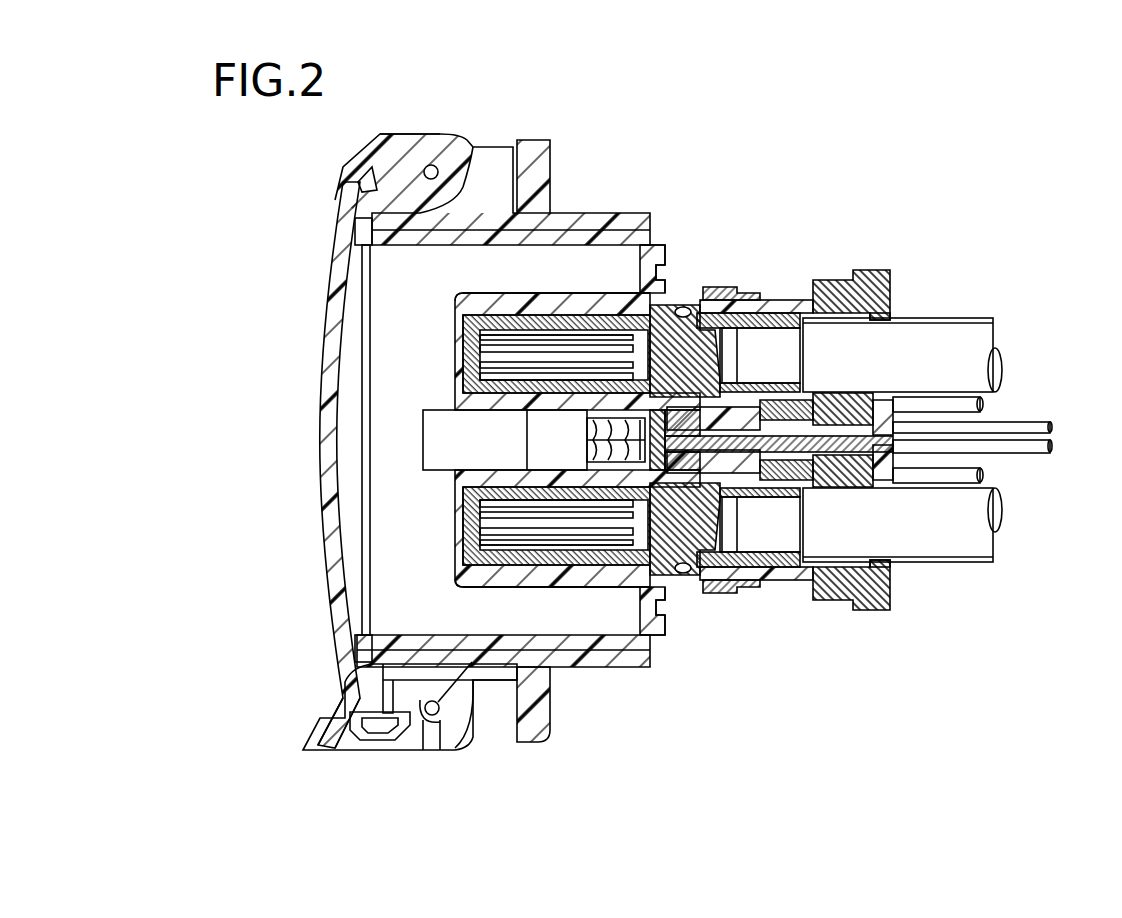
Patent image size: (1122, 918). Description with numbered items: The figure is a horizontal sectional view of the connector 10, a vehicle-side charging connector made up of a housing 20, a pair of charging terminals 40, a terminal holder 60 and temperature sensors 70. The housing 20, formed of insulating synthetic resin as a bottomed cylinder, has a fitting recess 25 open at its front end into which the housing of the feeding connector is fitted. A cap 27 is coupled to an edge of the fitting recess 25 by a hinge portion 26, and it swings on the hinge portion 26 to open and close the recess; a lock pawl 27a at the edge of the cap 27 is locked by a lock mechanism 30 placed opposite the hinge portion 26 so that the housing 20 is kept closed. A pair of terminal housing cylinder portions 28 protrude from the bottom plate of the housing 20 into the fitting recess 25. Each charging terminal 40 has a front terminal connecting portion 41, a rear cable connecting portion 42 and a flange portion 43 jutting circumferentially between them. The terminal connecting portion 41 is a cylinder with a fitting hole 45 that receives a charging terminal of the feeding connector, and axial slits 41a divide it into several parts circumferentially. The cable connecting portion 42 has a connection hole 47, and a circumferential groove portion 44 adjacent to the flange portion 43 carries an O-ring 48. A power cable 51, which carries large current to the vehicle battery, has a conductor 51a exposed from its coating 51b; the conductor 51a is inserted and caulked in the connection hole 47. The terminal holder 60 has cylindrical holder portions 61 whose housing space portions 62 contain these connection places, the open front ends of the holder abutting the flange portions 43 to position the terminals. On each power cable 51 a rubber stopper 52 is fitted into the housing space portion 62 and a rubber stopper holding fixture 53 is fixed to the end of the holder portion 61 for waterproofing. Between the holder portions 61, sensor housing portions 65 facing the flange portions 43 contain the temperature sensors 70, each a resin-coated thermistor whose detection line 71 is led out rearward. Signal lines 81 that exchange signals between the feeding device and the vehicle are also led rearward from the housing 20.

The connector 10 is at (705, 138).
The housing 20 is at (543, 136).
The fitting recess 25 is at (355, 628).
The hinge portion 26 is at (420, 140).
The cap 27 is at (312, 432).
The lock pawl 27a is at (352, 688).
The terminal housing cylinder portion 28 is at (462, 291).
The lock mechanism 30 is at (333, 748).
The charging terminal 40 is at (598, 290).
The terminal connecting portion 41 is at (548, 300).
The slit 41a is at (480, 368).
The cable connecting portion 42 is at (750, 292).
The flange portion 43 is at (673, 290).
The groove portion 44 is at (705, 292).
The fitting hole 45 is at (480, 352).
The connection hole 47 is at (790, 292).
The O-ring 48 is at (687, 292).
The power cable 51 is at (978, 303).
The conductor 51a is at (807, 292).
The coating 51b is at (935, 327).
The rubber stopper 52 is at (870, 283).
The rubber stopper holding fixture 53 is at (897, 328).
The terminal holder 60 is at (832, 270).
The holder portion 61 is at (787, 292).
The housing space portion 62 is at (768, 292).
The sensor housing portion 65 is at (600, 428).
The temperature sensor 70 is at (717, 292).
The detection line 71 is at (1052, 449).
The signal line 81 is at (985, 440).